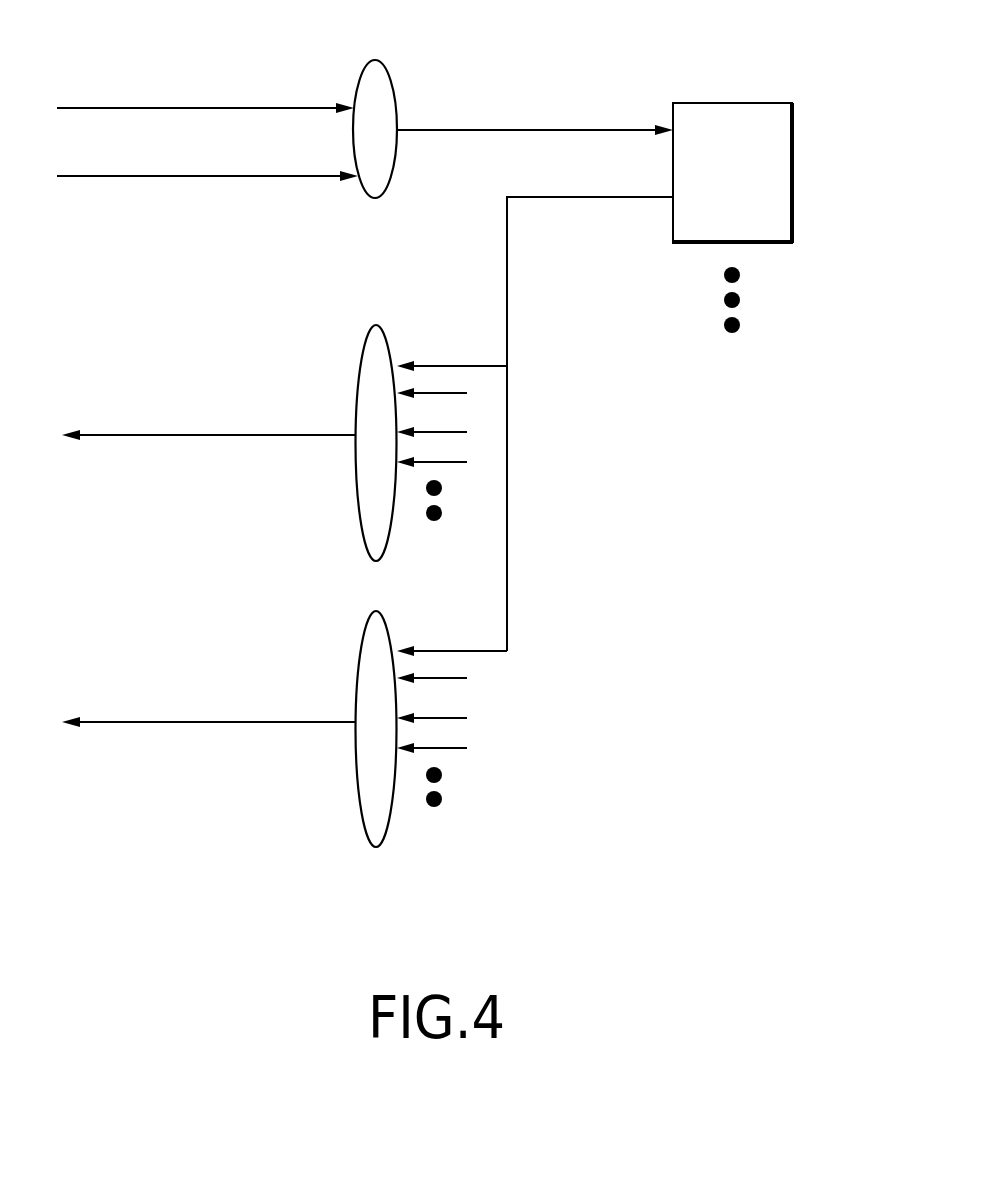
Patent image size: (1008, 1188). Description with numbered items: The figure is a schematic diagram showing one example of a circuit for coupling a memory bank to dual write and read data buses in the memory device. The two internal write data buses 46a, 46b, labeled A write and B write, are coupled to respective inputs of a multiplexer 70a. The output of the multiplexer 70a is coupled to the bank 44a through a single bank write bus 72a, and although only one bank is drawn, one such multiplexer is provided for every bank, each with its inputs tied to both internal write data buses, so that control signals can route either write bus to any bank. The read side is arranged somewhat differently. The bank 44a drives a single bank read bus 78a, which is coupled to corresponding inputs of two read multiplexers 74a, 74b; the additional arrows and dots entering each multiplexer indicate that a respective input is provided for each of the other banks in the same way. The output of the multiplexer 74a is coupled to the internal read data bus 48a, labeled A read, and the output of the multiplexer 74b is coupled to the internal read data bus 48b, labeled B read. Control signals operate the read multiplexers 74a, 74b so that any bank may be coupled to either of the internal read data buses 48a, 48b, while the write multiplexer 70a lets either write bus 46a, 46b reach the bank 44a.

The internal write data bus 46a is at (205, 108).
The internal write data bus 46b is at (243, 176).
The multiplexer 70a is at (393, 85).
The bank write bus 72a is at (560, 130).
The bank 44a is at (792, 147).
The bank read bus 78a is at (507, 307).
The multiplexer 74a is at (387, 340).
The multiplexer 74b is at (390, 630).
The internal read data bus 48a is at (263, 435).
The internal read data bus 48b is at (207, 722).